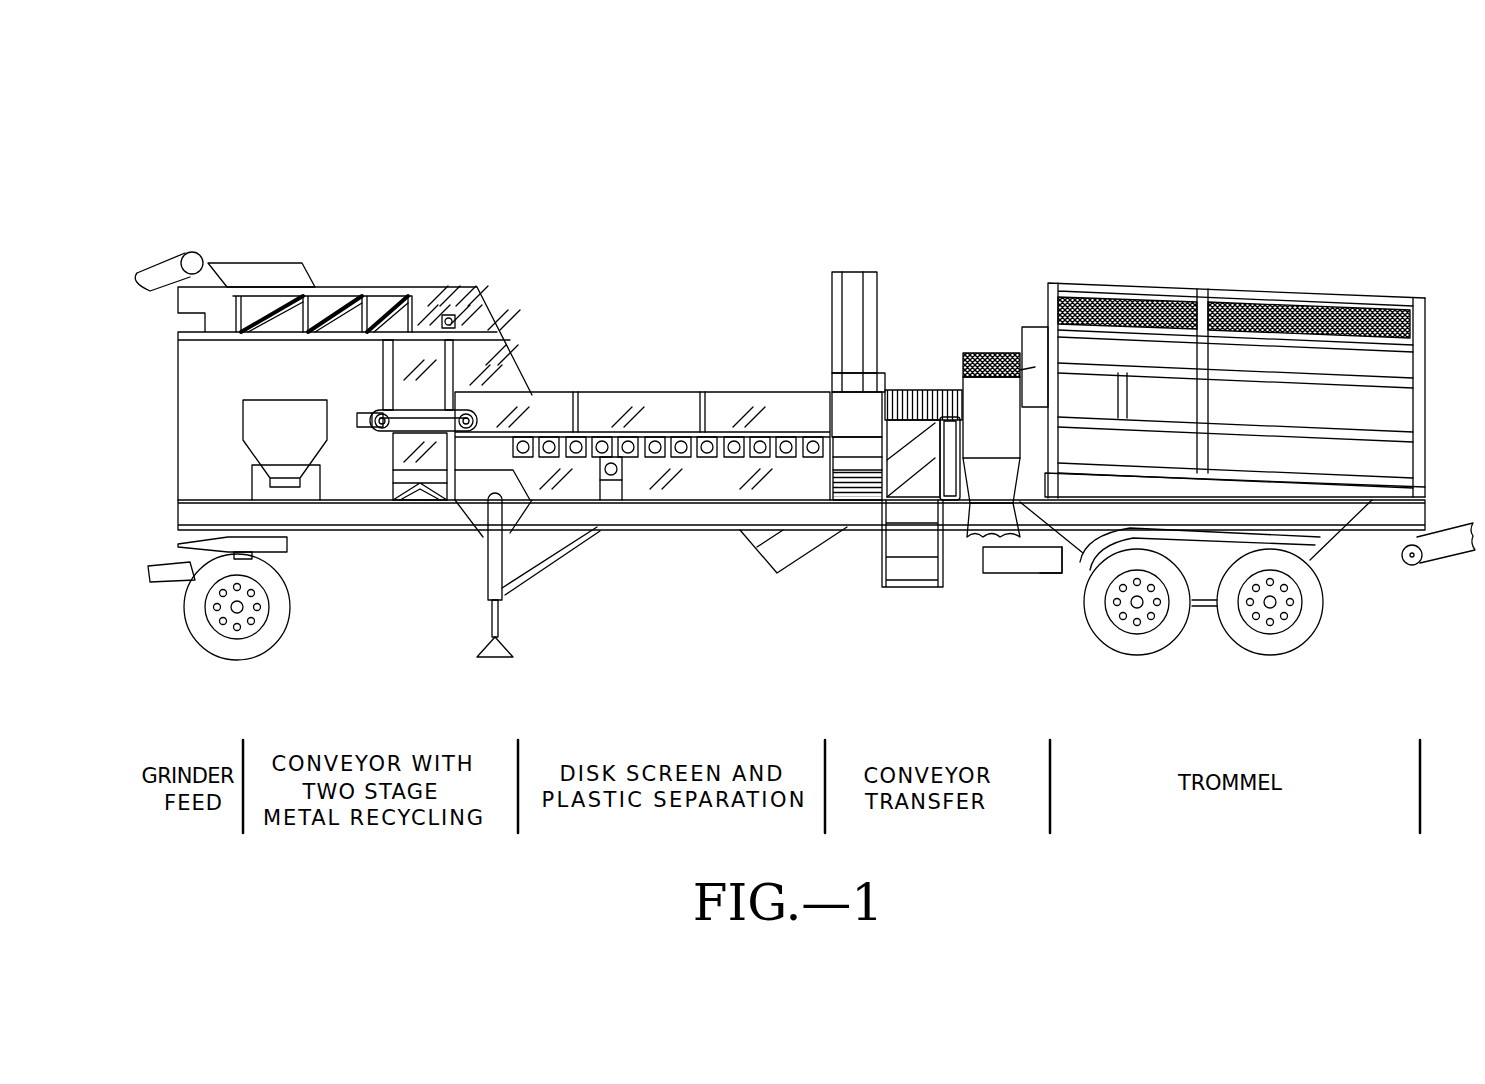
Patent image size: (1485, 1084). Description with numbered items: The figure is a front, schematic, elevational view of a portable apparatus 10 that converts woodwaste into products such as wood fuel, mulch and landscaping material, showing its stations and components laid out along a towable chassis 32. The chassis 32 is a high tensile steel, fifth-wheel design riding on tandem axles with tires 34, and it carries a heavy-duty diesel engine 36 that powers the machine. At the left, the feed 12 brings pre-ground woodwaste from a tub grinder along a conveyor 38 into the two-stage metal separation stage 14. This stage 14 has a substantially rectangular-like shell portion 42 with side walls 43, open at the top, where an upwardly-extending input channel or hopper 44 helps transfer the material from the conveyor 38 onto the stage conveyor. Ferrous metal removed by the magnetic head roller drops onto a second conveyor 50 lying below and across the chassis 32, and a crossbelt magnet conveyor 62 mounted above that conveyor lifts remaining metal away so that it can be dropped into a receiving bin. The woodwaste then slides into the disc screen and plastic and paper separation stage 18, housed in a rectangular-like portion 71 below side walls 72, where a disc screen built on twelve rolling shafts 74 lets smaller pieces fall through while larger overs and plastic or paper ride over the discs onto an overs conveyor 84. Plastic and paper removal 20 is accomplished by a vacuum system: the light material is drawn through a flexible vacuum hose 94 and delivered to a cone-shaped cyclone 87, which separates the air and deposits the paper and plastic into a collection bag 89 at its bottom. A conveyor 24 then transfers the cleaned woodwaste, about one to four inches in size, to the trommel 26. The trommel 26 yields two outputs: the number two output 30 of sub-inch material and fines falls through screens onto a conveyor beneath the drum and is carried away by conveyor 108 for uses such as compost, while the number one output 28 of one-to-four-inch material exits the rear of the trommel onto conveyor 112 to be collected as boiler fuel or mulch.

The portable apparatus 10 is at (872, 196).
The feed 12 is at (153, 247).
The two-stage metal separation stage 14 is at (355, 262).
The disc screen and plastic and paper separation stage 18 is at (622, 367).
The plastic and paper removal 20 is at (945, 332).
The conveyor 24 is at (832, 563).
The trommel 26 is at (1240, 252).
The number one output 28 is at (1443, 567).
The number two output 30 is at (1000, 572).
The towable chassis 32 is at (617, 510).
The tires 34 is at (277, 628).
The engine 36 is at (255, 425).
The conveyor 38 is at (168, 280).
The shell portion 42 is at (477, 287).
The side walls 43 is at (468, 309).
The input channel or hopper 44 is at (270, 263).
The second conveyor 50 is at (425, 450).
The overhead crossbelt magnet conveyor 62 is at (453, 407).
The rectangular-like portion 71 is at (640, 400).
The side walls 72 is at (725, 400).
The rolling shafts 74 is at (732, 453).
The overs conveyor 84 is at (870, 490).
The cyclone 87 is at (988, 403).
The collection bag 89 is at (985, 525).
The flexible vacuum hose 94 is at (913, 397).
The conveyor 108 is at (1057, 573).
The conveyor 112 is at (1453, 510).